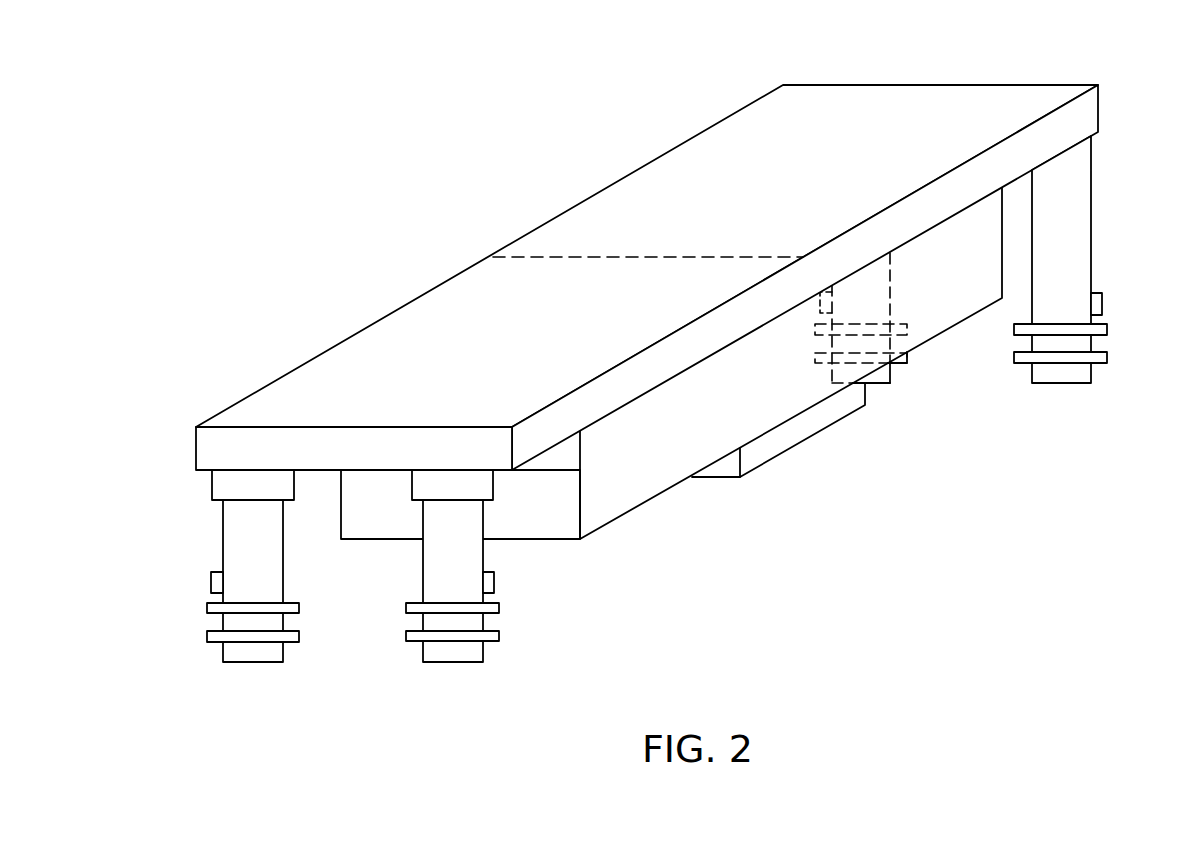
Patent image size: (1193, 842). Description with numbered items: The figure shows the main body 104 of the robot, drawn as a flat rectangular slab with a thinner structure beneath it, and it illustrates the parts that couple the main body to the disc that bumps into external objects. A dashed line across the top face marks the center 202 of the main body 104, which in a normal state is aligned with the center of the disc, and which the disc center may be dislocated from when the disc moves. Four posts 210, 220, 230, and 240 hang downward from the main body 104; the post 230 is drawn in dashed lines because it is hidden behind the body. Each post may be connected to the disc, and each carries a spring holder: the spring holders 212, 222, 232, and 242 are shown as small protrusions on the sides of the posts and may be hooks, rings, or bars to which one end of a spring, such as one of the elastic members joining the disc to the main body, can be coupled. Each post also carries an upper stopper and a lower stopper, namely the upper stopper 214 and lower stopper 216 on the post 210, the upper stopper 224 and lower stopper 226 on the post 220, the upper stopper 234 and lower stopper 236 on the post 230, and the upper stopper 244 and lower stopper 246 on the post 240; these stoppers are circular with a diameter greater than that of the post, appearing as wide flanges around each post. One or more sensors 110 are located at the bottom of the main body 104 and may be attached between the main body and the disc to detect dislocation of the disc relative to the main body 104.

The main body 104 is at (806, 85).
The sensors 110 is at (757, 468).
The center of the main body 202 is at (647, 257).
The post 210 is at (223, 545).
The spring holder 212 is at (211, 583).
The upper stopper 214 is at (207, 607).
The lower stopper 216 is at (207, 637).
The post 220 is at (423, 580).
The spring holder 222 is at (494, 580).
The upper stopper 224 is at (499, 607).
The lower stopper 226 is at (499, 637).
The post 230 is at (890, 273).
The spring holder 232 is at (820, 306).
The upper stopper 234 is at (907, 328).
The lower stopper 236 is at (908, 360).
The post 240 is at (1091, 222).
The spring holder 242 is at (1102, 298).
The upper stopper 244 is at (1107, 328).
The lower stopper 246 is at (1107, 356).